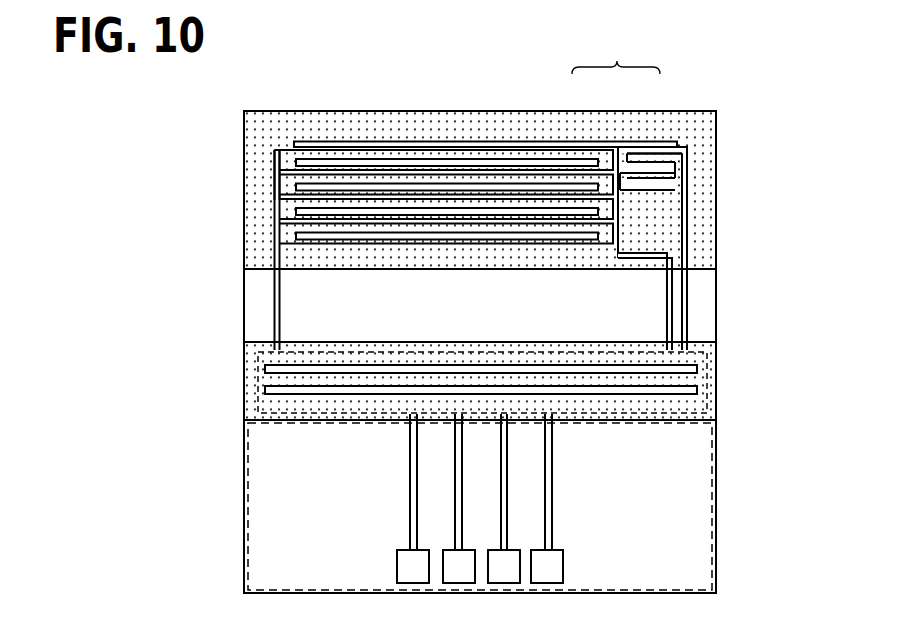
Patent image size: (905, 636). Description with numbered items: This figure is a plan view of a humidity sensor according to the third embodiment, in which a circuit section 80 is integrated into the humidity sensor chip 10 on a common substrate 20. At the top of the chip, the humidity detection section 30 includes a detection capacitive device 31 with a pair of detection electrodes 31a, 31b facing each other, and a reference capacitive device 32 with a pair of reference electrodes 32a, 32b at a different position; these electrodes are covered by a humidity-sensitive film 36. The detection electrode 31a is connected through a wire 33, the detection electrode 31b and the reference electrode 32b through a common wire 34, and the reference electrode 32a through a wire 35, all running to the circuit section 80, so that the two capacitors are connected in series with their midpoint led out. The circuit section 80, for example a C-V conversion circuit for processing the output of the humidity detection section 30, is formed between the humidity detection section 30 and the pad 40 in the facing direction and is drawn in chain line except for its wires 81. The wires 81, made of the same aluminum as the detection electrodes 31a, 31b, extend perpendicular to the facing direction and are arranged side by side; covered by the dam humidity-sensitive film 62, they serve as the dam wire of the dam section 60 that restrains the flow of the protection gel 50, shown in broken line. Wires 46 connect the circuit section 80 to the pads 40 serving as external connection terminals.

The humidity sensor chip 10 is at (788, 95).
The substrate 20 is at (716, 540).
The humidity detection section 30 is at (616, 54).
The detection capacitive device 31 is at (587, 116).
The detection electrode 31a is at (280, 150).
The detection electrode 31b is at (334, 141).
The reference capacitive device 32 is at (648, 116).
The reference electrode 32a is at (657, 180).
The reference electrode 32b is at (655, 192).
The wire 33 is at (277, 292).
The common wire 34 is at (668, 285).
The wire 35 is at (685, 320).
The humidity-sensitive film 36 is at (703, 148).
The pad 40 is at (568, 573).
The wire 46 is at (412, 517).
The protection gel 50 is at (670, 573).
The dam section 60 is at (255, 332).
The dam humidity-sensitive film 62 is at (252, 387).
The circuit section 80 is at (707, 405).
The wire 81 is at (692, 368).